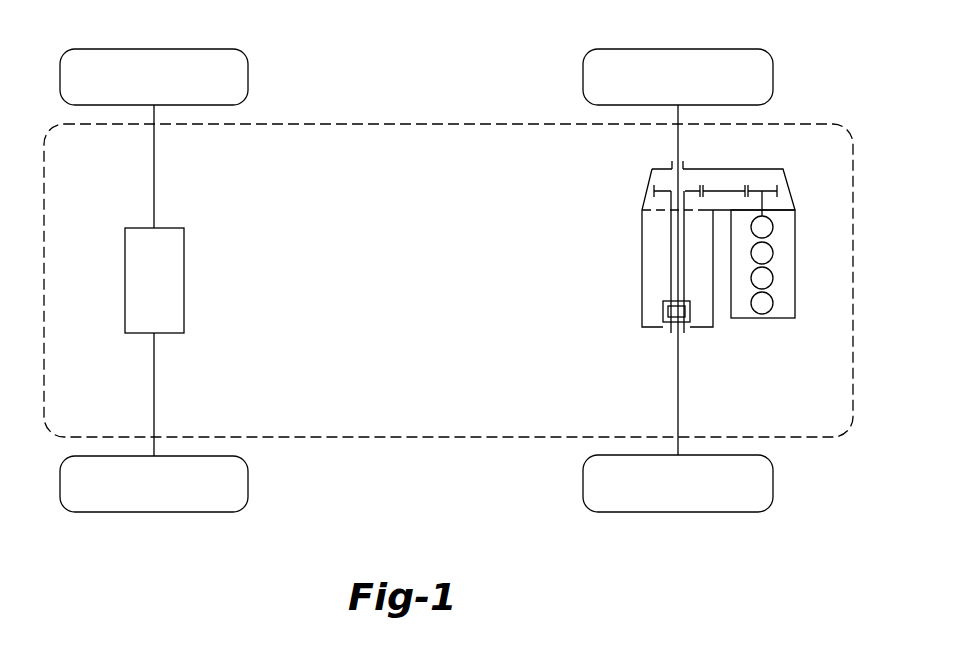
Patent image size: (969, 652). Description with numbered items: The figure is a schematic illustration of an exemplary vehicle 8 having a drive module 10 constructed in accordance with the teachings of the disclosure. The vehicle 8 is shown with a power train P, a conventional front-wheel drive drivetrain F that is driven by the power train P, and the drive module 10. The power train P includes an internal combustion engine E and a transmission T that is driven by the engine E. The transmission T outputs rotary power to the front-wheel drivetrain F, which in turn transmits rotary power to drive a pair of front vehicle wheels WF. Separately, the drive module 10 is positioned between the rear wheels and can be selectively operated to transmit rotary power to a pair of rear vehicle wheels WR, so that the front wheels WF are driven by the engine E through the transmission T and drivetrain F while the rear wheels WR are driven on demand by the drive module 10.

The vehicle 8 is at (60, 528).
The drive module 10 is at (196, 267).
The rear vehicle wheels WR is at (248, 77).
The front vehicle wheels WF is at (583, 77).
The transmission T is at (778, 182).
The power train P is at (801, 252).
The internal combustion engine E is at (783, 312).
The front-wheel drive drivetrain F is at (661, 314).